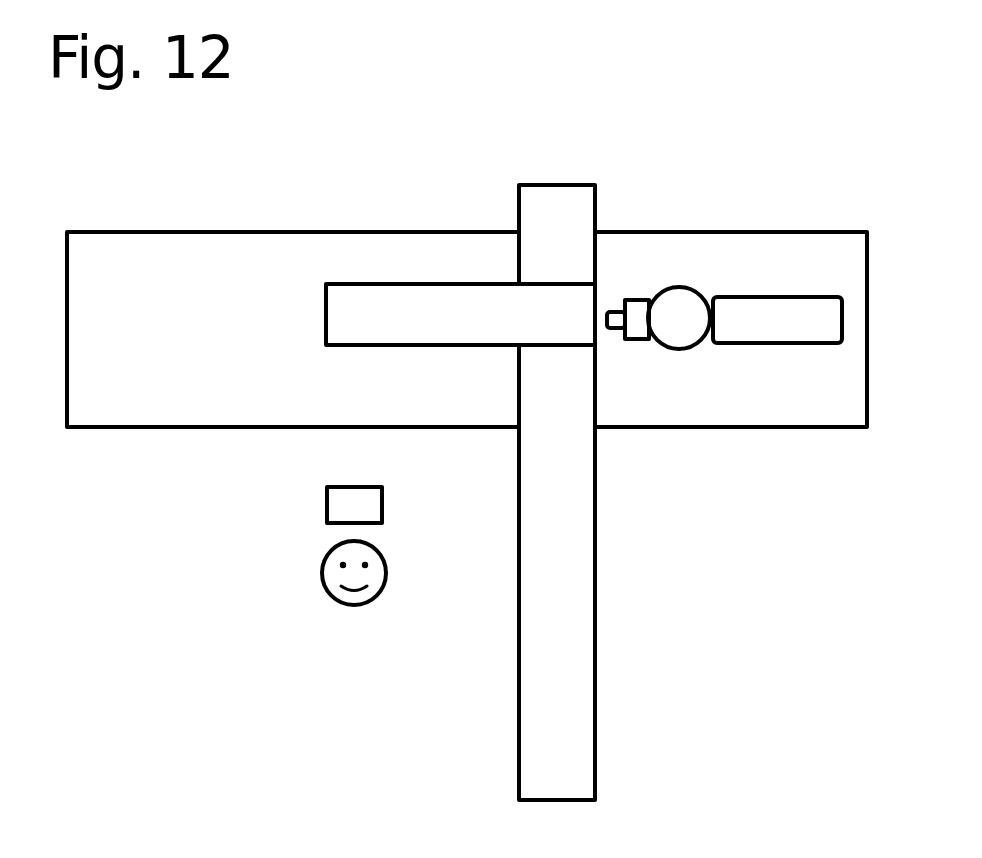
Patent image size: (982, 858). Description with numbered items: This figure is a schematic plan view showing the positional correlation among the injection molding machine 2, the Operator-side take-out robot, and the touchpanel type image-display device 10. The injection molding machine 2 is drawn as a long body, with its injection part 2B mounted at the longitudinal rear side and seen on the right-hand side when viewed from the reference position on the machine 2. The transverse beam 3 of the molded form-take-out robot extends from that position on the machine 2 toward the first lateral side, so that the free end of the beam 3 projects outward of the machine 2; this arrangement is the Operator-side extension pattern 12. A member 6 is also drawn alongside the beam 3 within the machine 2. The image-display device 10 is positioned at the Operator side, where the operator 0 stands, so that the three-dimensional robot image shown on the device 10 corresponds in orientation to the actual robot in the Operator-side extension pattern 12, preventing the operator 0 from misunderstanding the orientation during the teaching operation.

The operator 0 is at (352, 606).
The injection molding machine 2 is at (673, 230).
The injection part 2B is at (706, 350).
The transverse beam 3 is at (573, 572).
The horizontal slide member 6 is at (405, 297).
The image-display device 10 is at (333, 503).
The Operator-side extension pattern 12 is at (512, 687).